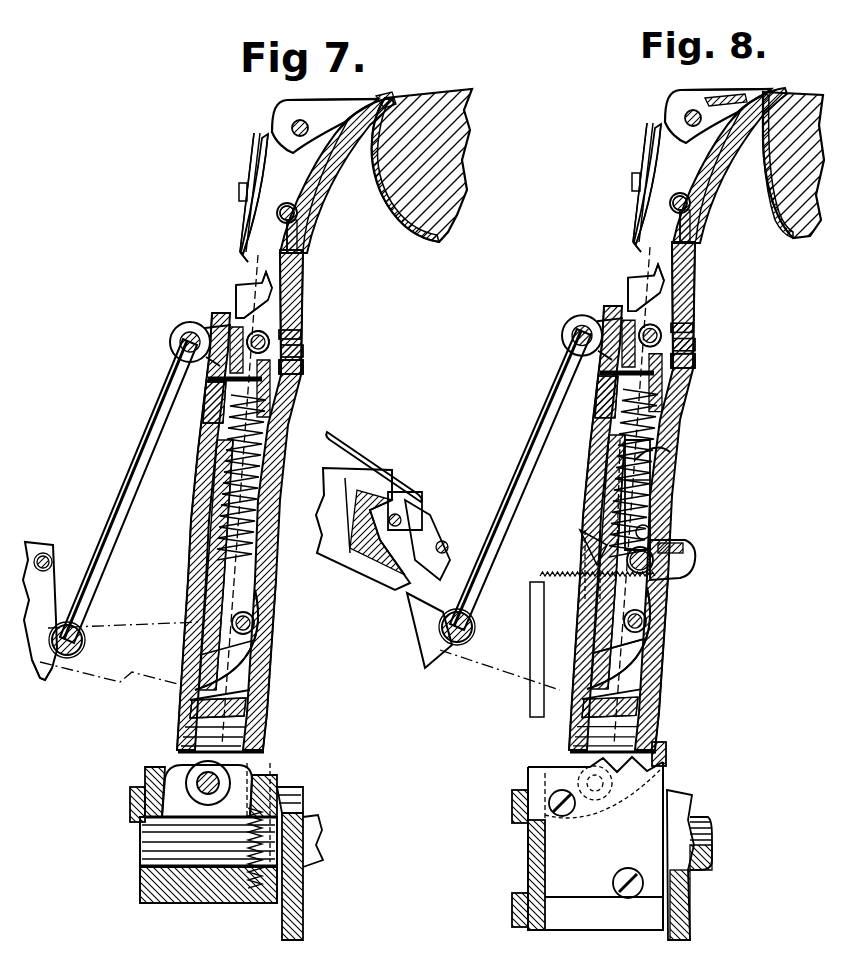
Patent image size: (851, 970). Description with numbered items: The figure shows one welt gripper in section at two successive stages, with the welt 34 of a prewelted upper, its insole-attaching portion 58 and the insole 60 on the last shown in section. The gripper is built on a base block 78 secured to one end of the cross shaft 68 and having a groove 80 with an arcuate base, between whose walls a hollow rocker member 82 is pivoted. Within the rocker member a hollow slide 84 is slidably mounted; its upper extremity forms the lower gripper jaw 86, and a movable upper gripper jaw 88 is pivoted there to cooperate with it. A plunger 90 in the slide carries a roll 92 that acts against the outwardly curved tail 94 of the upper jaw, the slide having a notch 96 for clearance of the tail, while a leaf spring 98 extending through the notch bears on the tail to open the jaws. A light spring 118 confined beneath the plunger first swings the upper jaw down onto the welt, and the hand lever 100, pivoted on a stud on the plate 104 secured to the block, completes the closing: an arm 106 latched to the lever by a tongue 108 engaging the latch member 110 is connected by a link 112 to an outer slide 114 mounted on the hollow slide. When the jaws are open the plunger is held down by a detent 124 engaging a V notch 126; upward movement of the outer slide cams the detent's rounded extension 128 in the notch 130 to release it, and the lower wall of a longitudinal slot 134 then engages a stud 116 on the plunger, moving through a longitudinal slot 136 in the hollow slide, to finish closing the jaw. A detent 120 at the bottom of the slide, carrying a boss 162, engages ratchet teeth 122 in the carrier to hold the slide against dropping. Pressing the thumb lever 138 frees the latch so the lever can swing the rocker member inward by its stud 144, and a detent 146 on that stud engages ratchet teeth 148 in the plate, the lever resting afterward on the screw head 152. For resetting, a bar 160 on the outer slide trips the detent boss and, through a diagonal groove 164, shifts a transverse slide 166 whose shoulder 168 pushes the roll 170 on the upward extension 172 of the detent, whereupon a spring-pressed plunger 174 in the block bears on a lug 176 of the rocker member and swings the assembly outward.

In FIG. 7, the welt 34 is at (382, 98).
In FIG. 8, the welt 34 is at (726, 86).
In FIG. 7, the insole-attaching portion 58 is at (402, 94).
In FIG. 8, the insole-attaching portion 58 is at (793, 90).
In FIG. 7, the insole 60 is at (465, 91).
In FIG. 8, the insole 60 is at (806, 97).
In FIG. 7, the cross shaft 68 is at (143, 850).
In FIG. 8, the cross shaft 68 is at (707, 833).
In FIG. 7, the base member or block 78 is at (257, 790).
In FIG. 8, the base member or block 78 is at (560, 765).
In FIG. 7, the groove 80 is at (263, 770).
In FIG. 7, the hollow rocker member or carrier 82 is at (258, 722).
In FIG. 8, the hollow rocker member or carrier 82 is at (675, 663).
In FIG. 7, the hollow slide 84 is at (302, 252).
In FIG. 8, the hollow slide 84 is at (700, 303).
In FIG. 7, the lower gripper jaw 86 is at (352, 140).
In FIG. 8, the lower gripper jaw 86 is at (724, 176).
In FIG. 7, the upper gripper jaw 88 is at (380, 100).
In FIG. 8, the upper gripper jaw 88 is at (727, 78).
In FIG. 7, the plunger 90 is at (272, 240).
In FIG. 8, the plunger 90 is at (666, 233).
In FIG. 7, the roll 92 is at (296, 216).
In FIG. 8, the roll 92 is at (701, 211).
In FIG. 7, the tail 94 is at (250, 236).
In FIG. 8, the tail 94 is at (629, 184).
In FIG. 7, the notch 96 is at (240, 254).
In FIG. 8, the notch 96 is at (618, 240).
In FIG. 7, the leaf spring 98 is at (256, 150).
In FIG. 8, the leaf spring 98 is at (626, 182).
In FIG. 7, the hand lever 100 is at (75, 558).
In FIG. 8, the hand lever 100 is at (363, 529).
In FIG. 8, the plate 104 is at (540, 600).
In FIG. 7, the arm 106 is at (137, 672).
In FIG. 8, the arm 106 is at (540, 687).
In FIG. 7, the tongue 108 is at (65, 677).
In FIG. 8, the tongue 108 is at (440, 624).
In FIG. 7, the latch member 110 is at (54, 673).
In FIG. 8, the latch member 110 is at (425, 650).
In FIG. 7, the link 112 is at (134, 468).
In FIG. 8, the link 112 is at (533, 418).
In FIG. 7, the outer slide 114 is at (303, 416).
In FIG. 8, the outer slide 114 is at (651, 528).
In FIG. 7, the stud 116 is at (303, 368).
In FIG. 8, the stud 116 is at (704, 367).
In FIG. 7, the spring 118 is at (270, 490).
In FIG. 8, the spring 118 is at (668, 556).
In FIG. 7, the detent 120 is at (263, 677).
In FIG. 8, the detent 120 is at (654, 638).
In FIG. 7, the ratchet teeth 122 is at (187, 710).
In FIG. 8, the ratchet teeth 122 is at (585, 708).
In FIG. 7, the detent 124 is at (276, 290).
In FIG. 8, the detent 124 is at (687, 292).
In FIG. 7, the V notch 126 is at (264, 353).
In FIG. 8, the V notch 126 is at (654, 347).
In FIG. 7, the rounded extension 128 is at (238, 287).
In FIG. 8, the rounded extension 128 is at (618, 272).
In FIG. 7, the notch 130 is at (232, 298).
In FIG. 8, the notch 130 is at (596, 295).
In FIG. 7, the longitudinal slot 134 is at (303, 352).
In FIG. 8, the longitudinal slot 134 is at (706, 347).
In FIG. 7, the longitudinal slot 136 is at (300, 338).
In FIG. 8, the longitudinal slot 136 is at (705, 327).
In FIG. 8, the thumb lever 138 is at (392, 482).
In FIG. 8, the stud 144 is at (667, 580).
In FIG. 8, the detent 146 is at (593, 537).
In FIG. 8, the ratchet teeth 148 is at (563, 576).
In FIG. 8, the head 152 is at (572, 815).
In FIG. 7, the cam member or bar 160 is at (226, 425).
In FIG. 8, the cam member or bar 160 is at (598, 409).
In FIG. 7, the boss 162 is at (194, 653).
In FIG. 8, the boss 162 is at (592, 640).
In FIG. 8, the diagonal groove 164 is at (663, 458).
In FIG. 8, the transverse slide 166 is at (650, 553).
In FIG. 8, the longitudinal wall or shoulder 168 is at (651, 482).
In FIG. 8, the roll 170 is at (670, 545).
In FIG. 8, the upward extension 172 is at (650, 528).
In FIG. 7, the spring-pressed plunger 174 is at (267, 785).
In FIG. 8, the spring-pressed plunger 174 is at (663, 770).
In FIG. 7, the lug 176 is at (277, 755).
In FIG. 8, the lug 176 is at (662, 753).